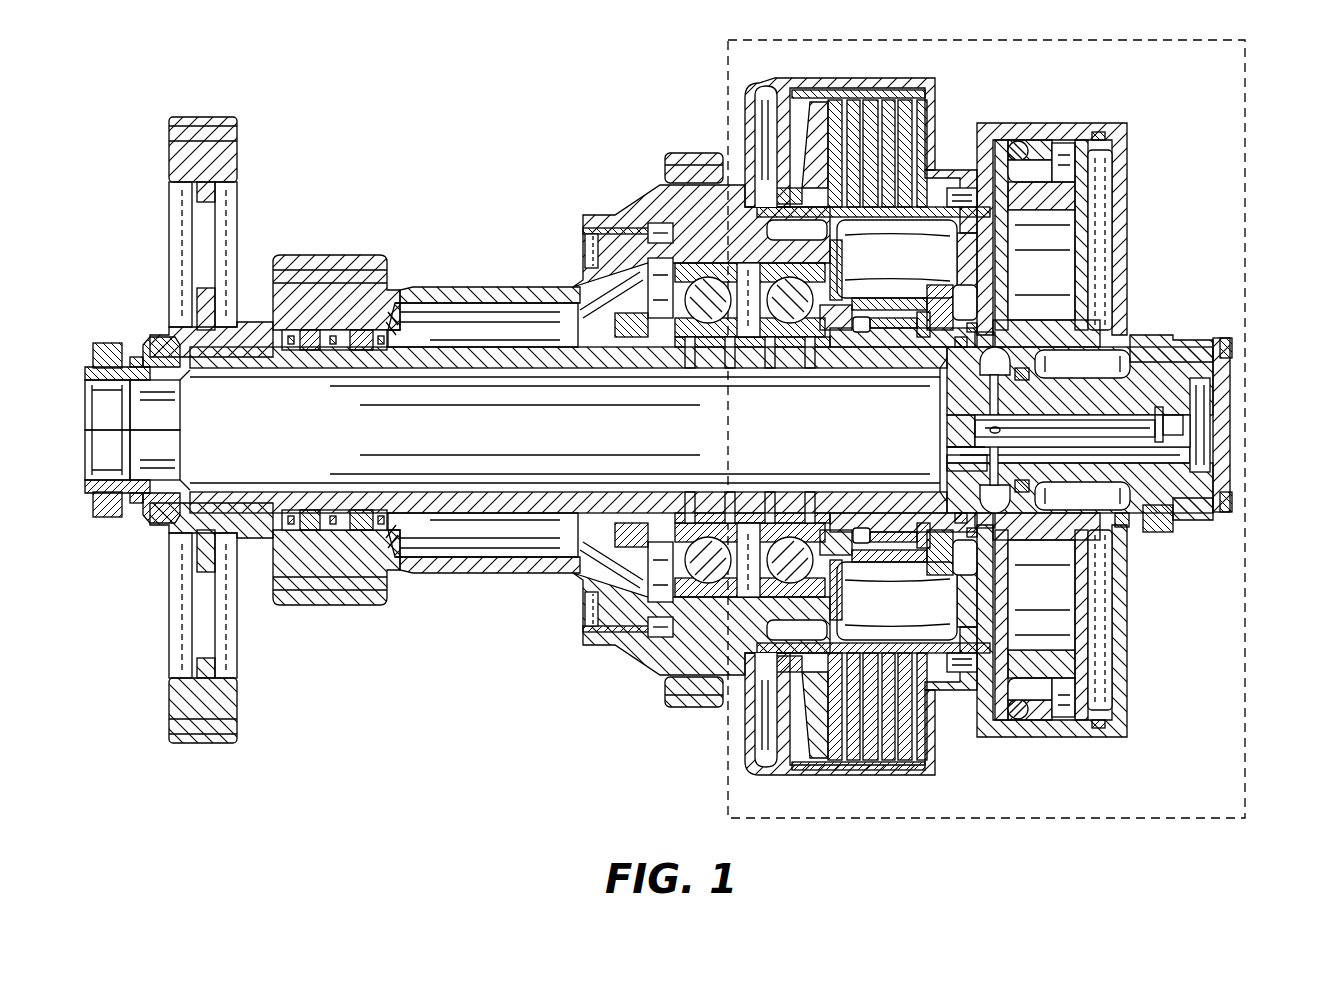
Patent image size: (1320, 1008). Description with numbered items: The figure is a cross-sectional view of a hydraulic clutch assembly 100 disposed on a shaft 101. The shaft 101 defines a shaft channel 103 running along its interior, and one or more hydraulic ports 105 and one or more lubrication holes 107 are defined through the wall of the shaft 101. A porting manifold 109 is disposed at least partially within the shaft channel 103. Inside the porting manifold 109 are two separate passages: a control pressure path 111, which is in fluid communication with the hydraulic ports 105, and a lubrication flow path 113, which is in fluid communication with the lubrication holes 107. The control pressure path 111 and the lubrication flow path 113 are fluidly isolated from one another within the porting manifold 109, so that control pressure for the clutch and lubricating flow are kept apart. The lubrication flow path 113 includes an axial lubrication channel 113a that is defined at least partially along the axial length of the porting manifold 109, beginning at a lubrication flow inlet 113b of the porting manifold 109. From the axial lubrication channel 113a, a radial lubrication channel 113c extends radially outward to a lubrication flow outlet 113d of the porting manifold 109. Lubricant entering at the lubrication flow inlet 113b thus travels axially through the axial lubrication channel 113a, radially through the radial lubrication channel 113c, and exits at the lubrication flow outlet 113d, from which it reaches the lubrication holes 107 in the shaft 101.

The hydraulic clutch assembly 100 is at (726, 81).
The shaft 101 is at (1187, 345).
The shaft channel 103 is at (870, 462).
The hydraulic ports 105 is at (995, 330).
The lubrication holes 107 is at (1045, 330).
The porting manifold 109 is at (1233, 372).
The control pressure path 111 is at (1128, 430).
The lubrication flow path 113 is at (1143, 456).
The axial lubrication channel 113a is at (978, 465).
The lubrication flow inlet 113b is at (975, 450).
The radial lubrication channel 113c is at (1176, 522).
The lubrication flow outlet 113d is at (1122, 520).